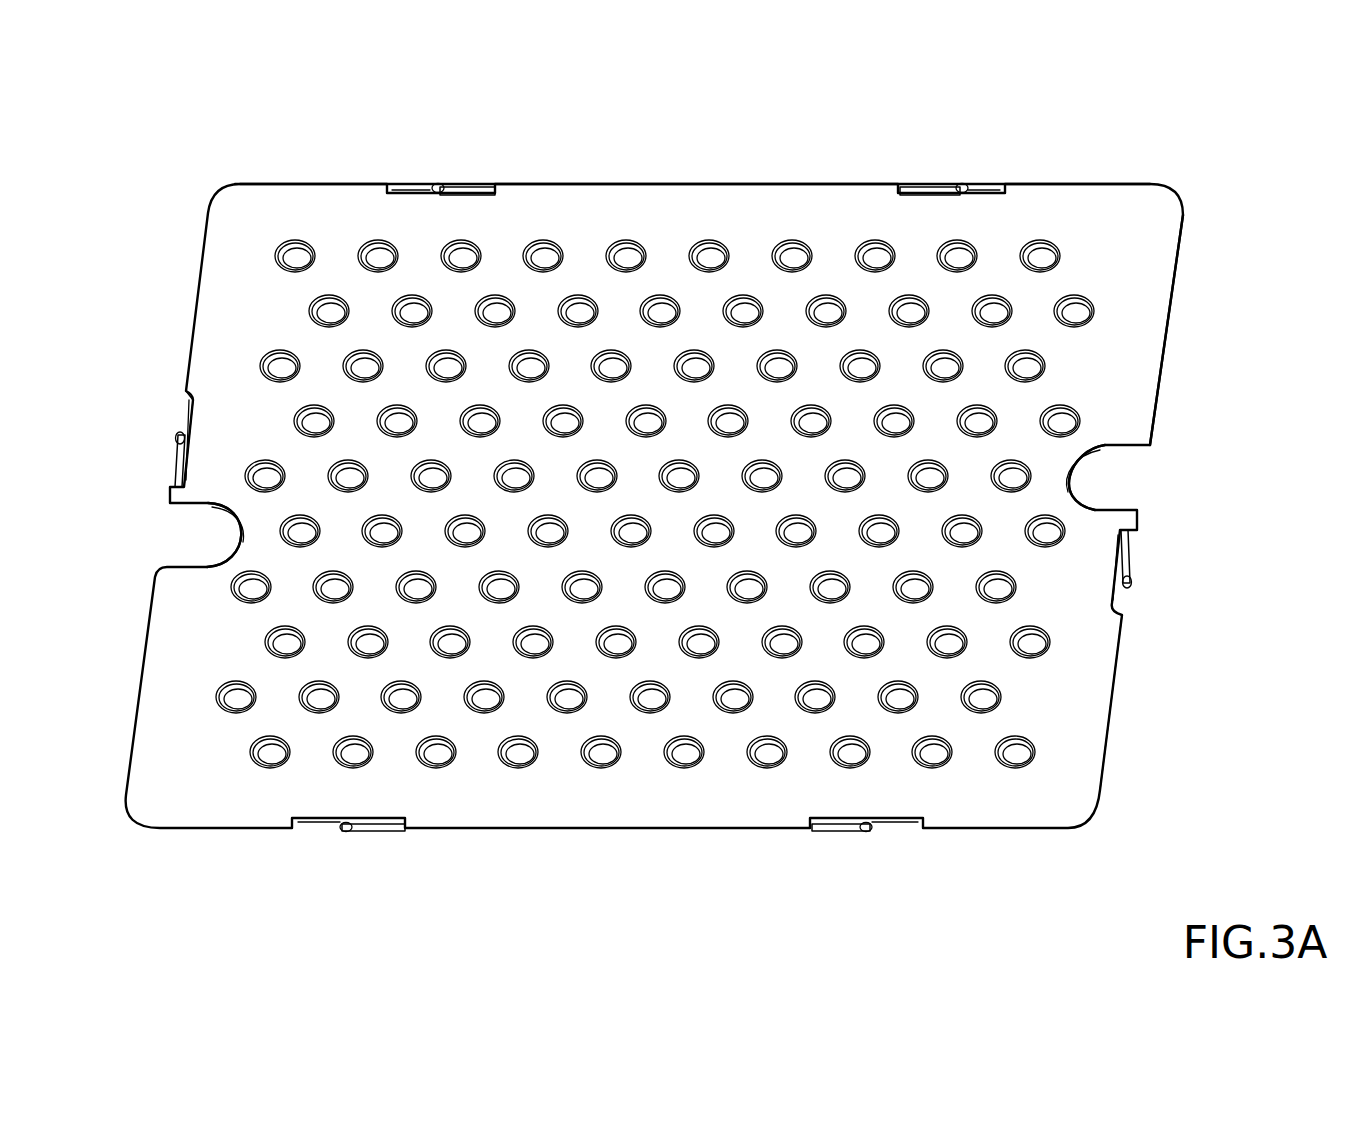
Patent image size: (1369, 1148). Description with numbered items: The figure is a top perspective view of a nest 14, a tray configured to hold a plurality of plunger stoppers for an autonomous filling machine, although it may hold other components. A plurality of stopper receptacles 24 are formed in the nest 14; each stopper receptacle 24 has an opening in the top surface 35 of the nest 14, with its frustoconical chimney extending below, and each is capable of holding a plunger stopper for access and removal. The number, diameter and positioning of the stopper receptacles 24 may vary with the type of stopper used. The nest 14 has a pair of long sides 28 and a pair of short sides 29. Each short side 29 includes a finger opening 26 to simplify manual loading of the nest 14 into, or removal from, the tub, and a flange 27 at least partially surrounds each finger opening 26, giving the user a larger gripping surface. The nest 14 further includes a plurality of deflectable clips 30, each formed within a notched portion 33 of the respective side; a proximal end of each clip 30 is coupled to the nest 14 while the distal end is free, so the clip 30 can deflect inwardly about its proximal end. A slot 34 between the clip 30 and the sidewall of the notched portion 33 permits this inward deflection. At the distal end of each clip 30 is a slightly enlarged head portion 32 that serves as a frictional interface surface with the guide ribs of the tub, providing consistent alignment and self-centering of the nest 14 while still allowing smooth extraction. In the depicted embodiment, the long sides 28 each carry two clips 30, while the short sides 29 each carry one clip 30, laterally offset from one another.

The nest 14 is at (170, 125).
The stopper receptacles 24 is at (270, 352).
The finger opening 26 is at (183, 565).
The flange 27 is at (1130, 452).
The long sides 28 is at (648, 183).
The short sides 29 is at (1165, 342).
The deflectable clips 30 is at (470, 188).
The head portion 32 is at (437, 183).
The notched portion 33 is at (392, 196).
The slot 34 is at (428, 204).
The top surface 35 is at (1092, 246).